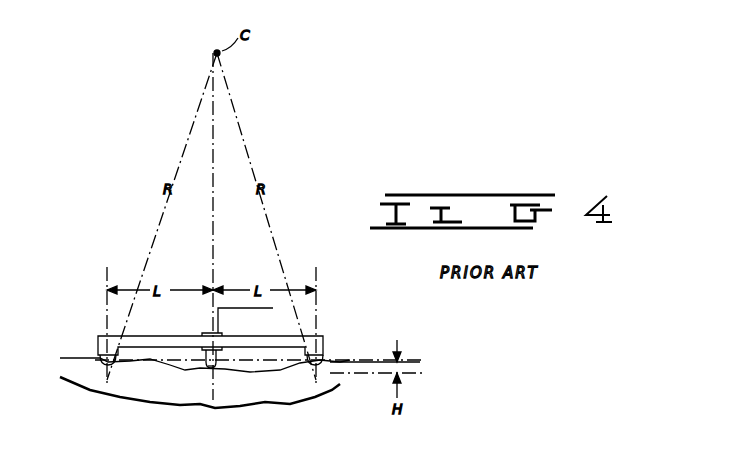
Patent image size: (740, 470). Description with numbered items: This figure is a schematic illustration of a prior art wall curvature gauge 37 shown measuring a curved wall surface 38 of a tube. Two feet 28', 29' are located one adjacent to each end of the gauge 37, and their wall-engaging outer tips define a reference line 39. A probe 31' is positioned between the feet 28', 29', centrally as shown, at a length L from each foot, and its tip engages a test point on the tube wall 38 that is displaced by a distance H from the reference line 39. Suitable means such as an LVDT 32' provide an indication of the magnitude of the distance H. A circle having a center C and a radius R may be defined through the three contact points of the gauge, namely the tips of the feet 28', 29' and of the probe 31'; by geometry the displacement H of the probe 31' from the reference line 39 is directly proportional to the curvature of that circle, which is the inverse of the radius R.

The wall curvature gauge 37 is at (251, 348).
The reference line 39 is at (247, 357).
The LVDT 32' is at (194, 338).
The foot 28' is at (125, 374).
The foot 29' is at (294, 375).
The probe 31' is at (193, 403).
The curved wall surface 38 is at (333, 376).